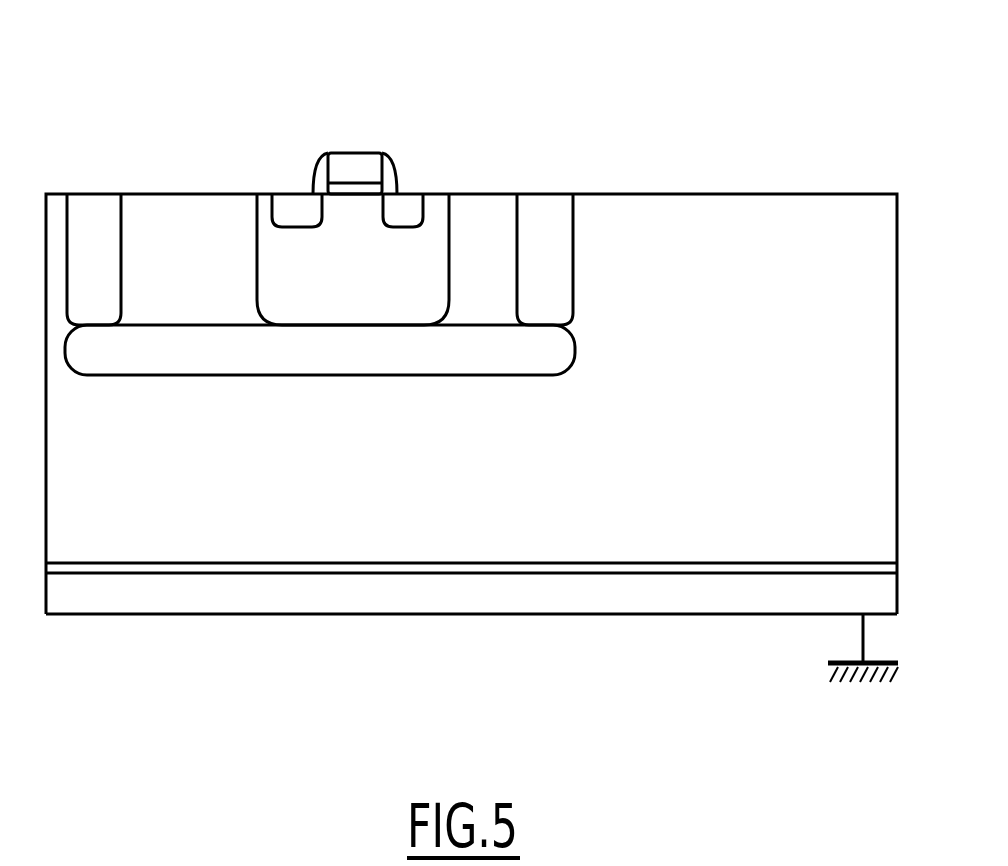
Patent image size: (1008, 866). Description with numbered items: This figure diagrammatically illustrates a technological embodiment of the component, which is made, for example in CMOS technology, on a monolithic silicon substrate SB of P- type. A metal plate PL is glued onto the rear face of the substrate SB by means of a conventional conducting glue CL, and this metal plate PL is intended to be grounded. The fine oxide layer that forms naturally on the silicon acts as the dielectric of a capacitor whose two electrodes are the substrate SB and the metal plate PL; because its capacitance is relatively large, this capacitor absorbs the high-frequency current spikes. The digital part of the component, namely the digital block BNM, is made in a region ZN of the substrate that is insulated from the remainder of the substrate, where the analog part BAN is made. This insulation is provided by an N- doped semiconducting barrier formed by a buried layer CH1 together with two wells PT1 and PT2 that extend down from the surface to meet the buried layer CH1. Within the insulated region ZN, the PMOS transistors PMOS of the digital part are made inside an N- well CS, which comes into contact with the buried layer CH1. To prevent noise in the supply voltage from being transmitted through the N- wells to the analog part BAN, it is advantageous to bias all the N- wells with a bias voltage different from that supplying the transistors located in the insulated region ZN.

The substrate SB is at (502, 485).
The metal plate PL is at (160, 590).
The conducting glue CL is at (88, 565).
The buried layer CH1 is at (542, 350).
The well PT2 is at (90, 218).
The well PT1 is at (552, 221).
The N- well CS is at (425, 238).
The PMOS transistor PMOS is at (364, 146).
The region of the substrate ZN is at (198, 226).
The digital block BNM is at (515, 80).
The analog part BAN is at (888, 145).